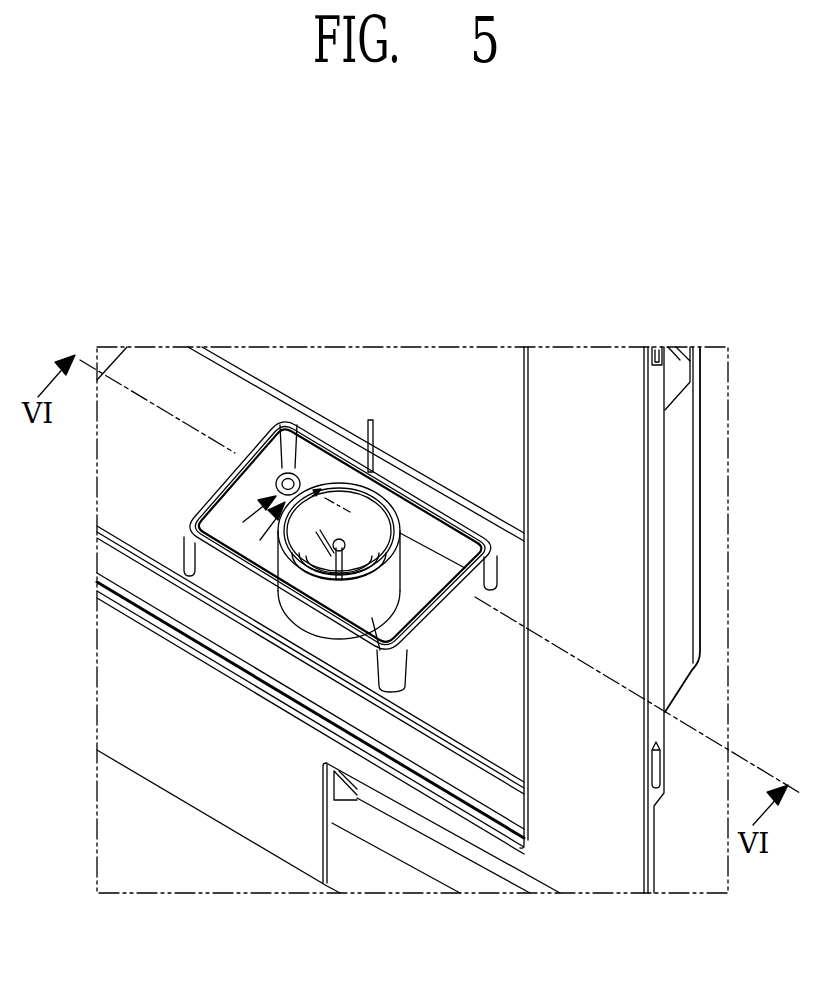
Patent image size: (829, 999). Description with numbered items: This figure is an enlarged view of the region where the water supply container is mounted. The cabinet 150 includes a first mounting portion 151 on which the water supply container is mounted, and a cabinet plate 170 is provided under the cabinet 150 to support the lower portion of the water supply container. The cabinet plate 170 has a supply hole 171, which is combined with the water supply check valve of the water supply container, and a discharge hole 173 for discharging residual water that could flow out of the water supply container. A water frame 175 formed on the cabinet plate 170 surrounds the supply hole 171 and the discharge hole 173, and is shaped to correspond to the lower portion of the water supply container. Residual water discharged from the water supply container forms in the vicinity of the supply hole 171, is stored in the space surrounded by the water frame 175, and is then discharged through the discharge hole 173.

The cabinet 150 is at (603, 605).
The first mounting portion 151 is at (215, 384).
The cabinet plate 170 is at (480, 710).
The supply hole 171 is at (367, 527).
The discharge hole 173 is at (289, 473).
The water frame 175 is at (230, 577).